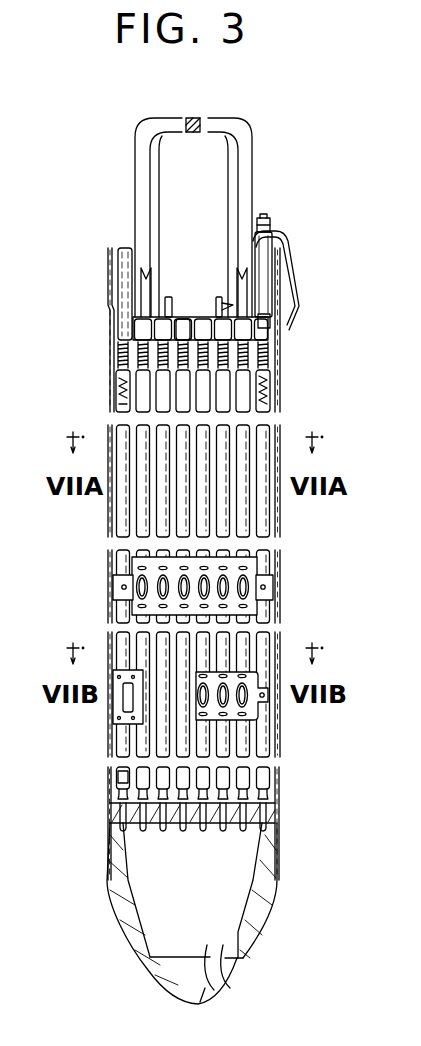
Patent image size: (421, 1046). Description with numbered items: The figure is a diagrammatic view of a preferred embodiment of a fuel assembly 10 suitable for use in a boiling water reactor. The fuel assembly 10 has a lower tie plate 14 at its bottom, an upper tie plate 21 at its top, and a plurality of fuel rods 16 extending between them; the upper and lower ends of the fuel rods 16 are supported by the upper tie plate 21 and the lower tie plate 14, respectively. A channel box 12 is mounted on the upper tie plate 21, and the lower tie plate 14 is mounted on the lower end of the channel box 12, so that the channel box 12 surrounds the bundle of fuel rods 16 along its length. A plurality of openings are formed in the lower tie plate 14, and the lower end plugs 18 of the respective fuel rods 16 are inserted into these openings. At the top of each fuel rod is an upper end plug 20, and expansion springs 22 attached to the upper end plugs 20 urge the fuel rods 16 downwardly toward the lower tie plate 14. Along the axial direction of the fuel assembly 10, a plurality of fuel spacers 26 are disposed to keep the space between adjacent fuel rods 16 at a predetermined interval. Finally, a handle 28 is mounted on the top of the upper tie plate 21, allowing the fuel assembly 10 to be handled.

The fuel assembly 10 is at (100, 568).
The channel box 12 is at (281, 397).
The lower tie plate 14 is at (262, 920).
The fuel rods 16 is at (270, 513).
The lower end plugs 18 is at (222, 817).
The upper end plugs 20 is at (276, 352).
The upper tie plate 21 is at (184, 318).
The expansion springs 22 is at (117, 346).
The fuel spacers 26 is at (273, 585).
The handle 28 is at (142, 214).